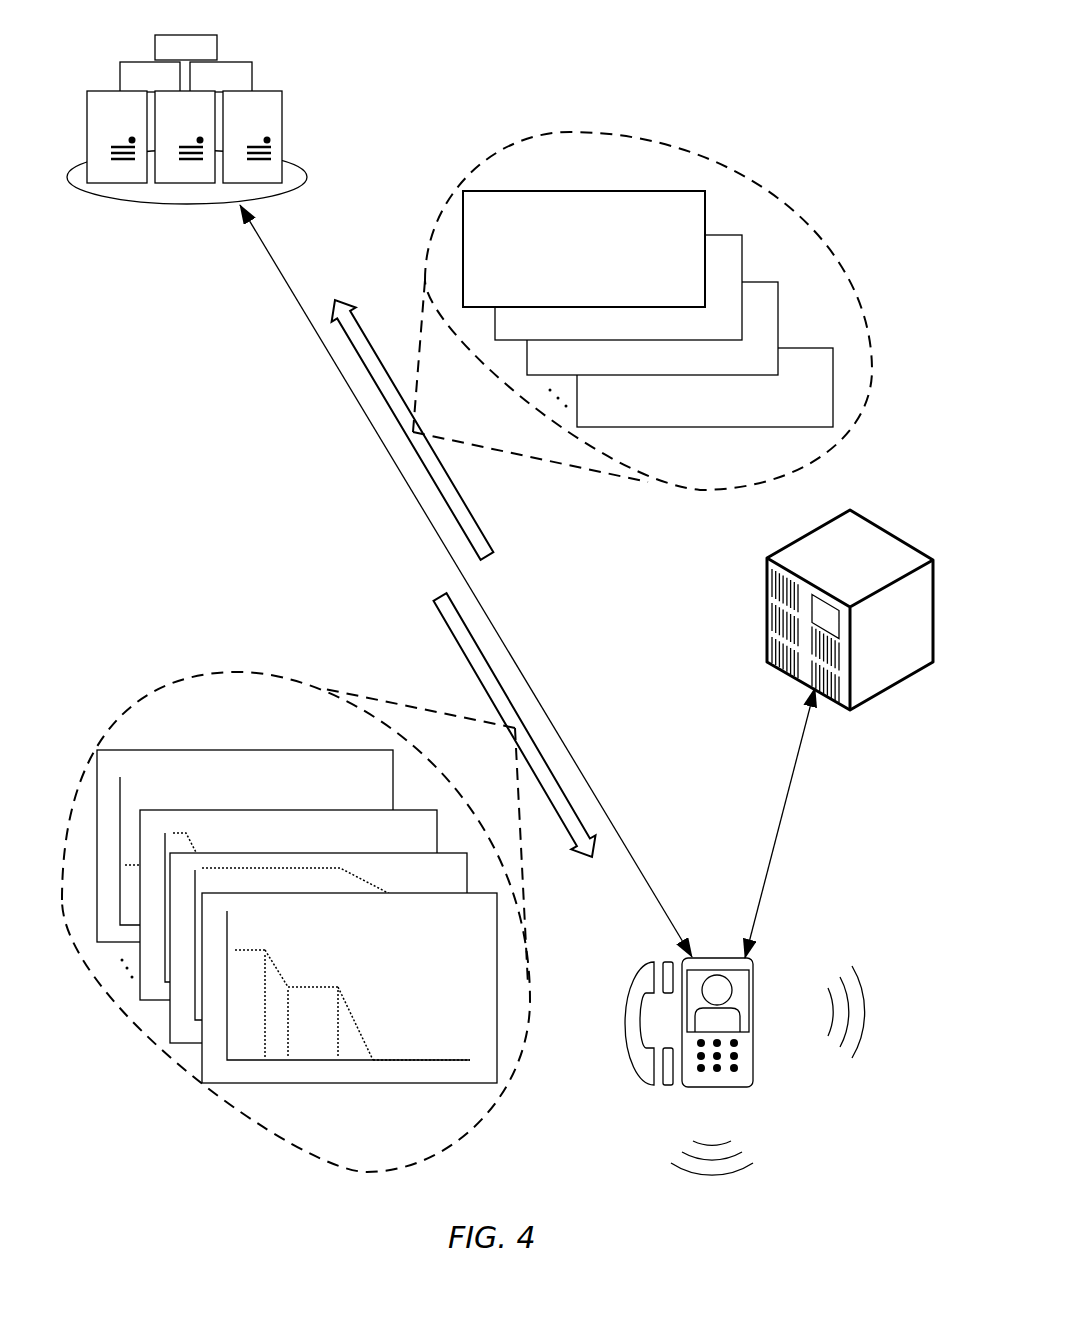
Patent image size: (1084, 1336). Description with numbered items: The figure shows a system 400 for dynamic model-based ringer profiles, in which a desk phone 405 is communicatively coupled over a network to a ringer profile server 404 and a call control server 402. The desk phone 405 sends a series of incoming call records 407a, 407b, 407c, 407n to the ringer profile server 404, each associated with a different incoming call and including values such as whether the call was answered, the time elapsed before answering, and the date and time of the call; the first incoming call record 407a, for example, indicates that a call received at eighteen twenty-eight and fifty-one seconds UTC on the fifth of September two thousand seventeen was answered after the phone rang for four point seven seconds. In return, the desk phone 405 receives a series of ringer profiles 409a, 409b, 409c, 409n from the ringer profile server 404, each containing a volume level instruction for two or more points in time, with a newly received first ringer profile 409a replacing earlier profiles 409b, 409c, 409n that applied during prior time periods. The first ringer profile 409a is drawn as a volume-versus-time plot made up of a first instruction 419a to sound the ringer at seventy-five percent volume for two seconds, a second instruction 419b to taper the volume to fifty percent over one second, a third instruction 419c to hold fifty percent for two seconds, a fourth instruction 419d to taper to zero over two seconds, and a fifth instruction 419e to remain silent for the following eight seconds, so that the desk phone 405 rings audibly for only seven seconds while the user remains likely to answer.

The system 400 is at (168, 1209).
The call control server 402 is at (768, 576).
The ringer profile server 404 is at (155, 205).
The desk phone 405 is at (754, 995).
The first incoming call record 407a is at (545, 191).
The incoming call record 407b is at (732, 334).
The incoming call record 407c is at (768, 369).
The incoming call record 407n is at (823, 422).
The first ringer profile 409a is at (349, 1010).
The ringer profile 409b is at (458, 877).
The ringer profile 409c is at (430, 836).
The ringer profile 409n is at (385, 776).
The first instruction 419a is at (250, 946).
The second instruction 419b is at (278, 962).
The third instruction 419c is at (326, 984).
The fourth instruction 419d is at (361, 1021).
The fifth instruction 419e is at (418, 1051).